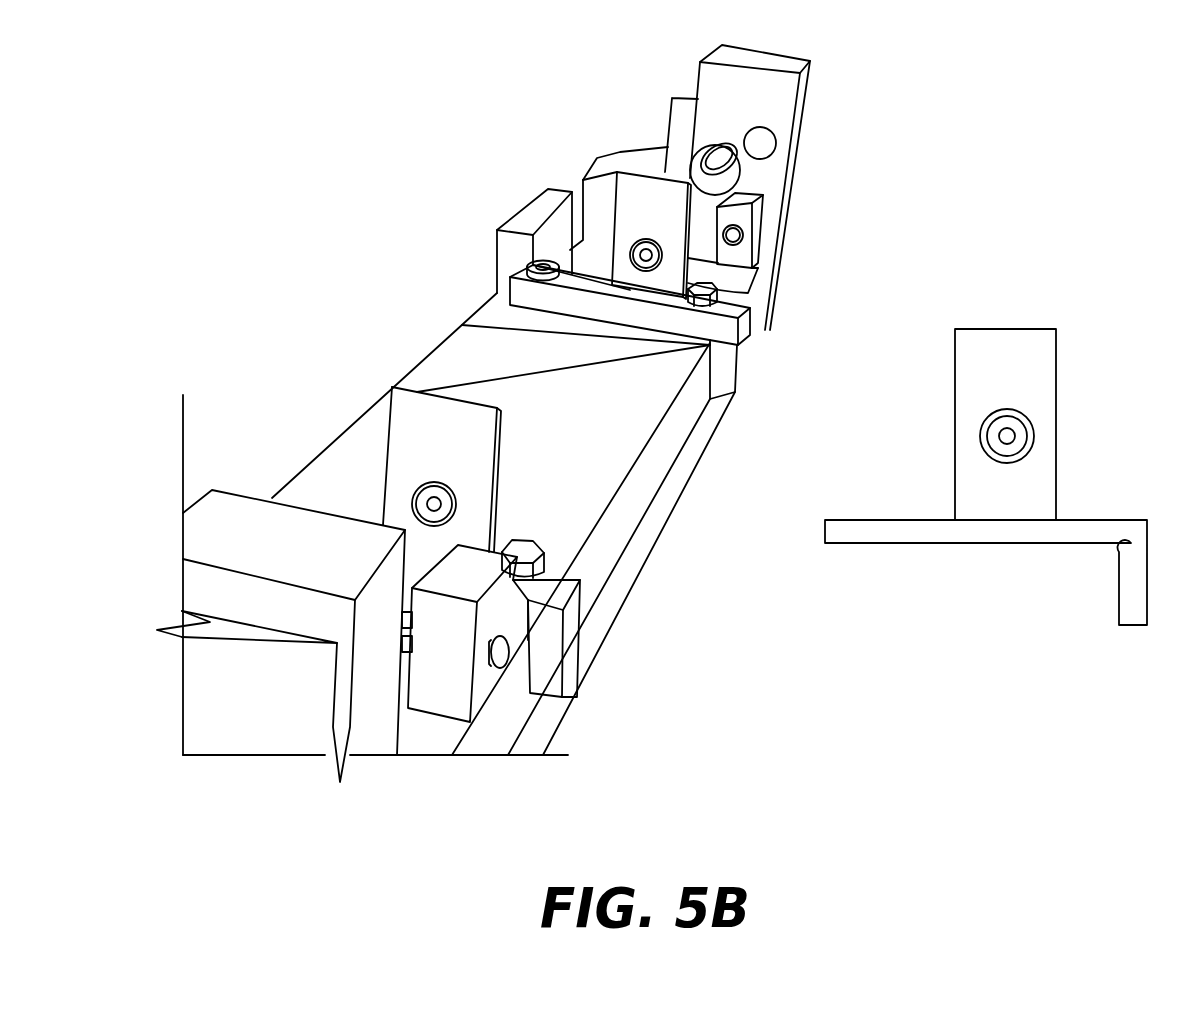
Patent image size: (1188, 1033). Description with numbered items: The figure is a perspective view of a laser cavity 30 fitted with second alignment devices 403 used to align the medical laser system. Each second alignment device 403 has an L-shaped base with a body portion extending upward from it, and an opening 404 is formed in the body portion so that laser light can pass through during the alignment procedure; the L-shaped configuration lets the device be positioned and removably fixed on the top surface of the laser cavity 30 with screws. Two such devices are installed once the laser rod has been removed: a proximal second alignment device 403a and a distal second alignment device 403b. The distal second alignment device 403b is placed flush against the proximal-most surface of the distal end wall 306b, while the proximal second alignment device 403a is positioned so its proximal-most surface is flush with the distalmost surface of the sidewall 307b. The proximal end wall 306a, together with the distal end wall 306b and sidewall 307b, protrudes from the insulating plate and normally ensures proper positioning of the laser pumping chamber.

The laser cavity 30 is at (300, 240).
The sidewall 307b is at (531, 213).
The distal end wall 306b is at (752, 217).
The proximal second alignment device 403a is at (697, 273).
The distal second alignment device 403b is at (495, 437).
The proximal end wall 306a is at (457, 680).
The second alignment device 403 is at (1008, 331).
The opening 404 is at (1015, 436).